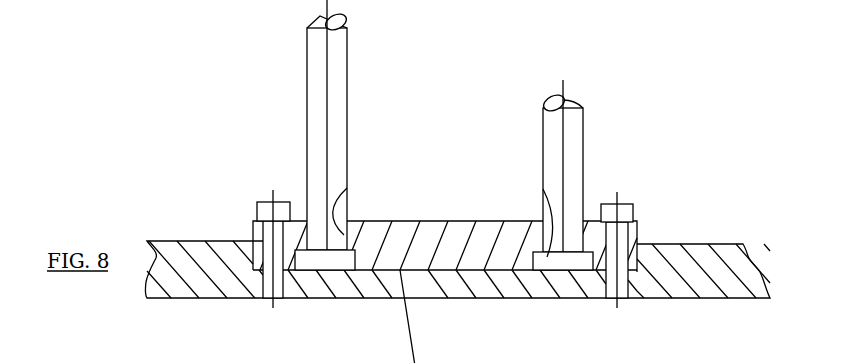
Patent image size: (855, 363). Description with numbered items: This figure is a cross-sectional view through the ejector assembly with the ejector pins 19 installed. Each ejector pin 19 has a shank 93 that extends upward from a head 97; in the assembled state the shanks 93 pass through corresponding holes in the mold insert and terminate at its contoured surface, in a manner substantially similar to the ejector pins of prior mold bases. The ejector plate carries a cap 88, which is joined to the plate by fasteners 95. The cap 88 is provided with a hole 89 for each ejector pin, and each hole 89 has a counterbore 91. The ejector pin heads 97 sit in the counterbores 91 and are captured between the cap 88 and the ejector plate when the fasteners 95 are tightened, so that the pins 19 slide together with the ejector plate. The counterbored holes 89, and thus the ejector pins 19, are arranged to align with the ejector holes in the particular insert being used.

The ejector pins 19 is at (368, 134).
The cap 88 is at (449, 221).
The hole 89 is at (349, 185).
The counterbore 91 is at (543, 189).
The shanks 93 is at (341, 62).
The fasteners 95 is at (633, 204).
The ejector pin heads 97 is at (576, 252).